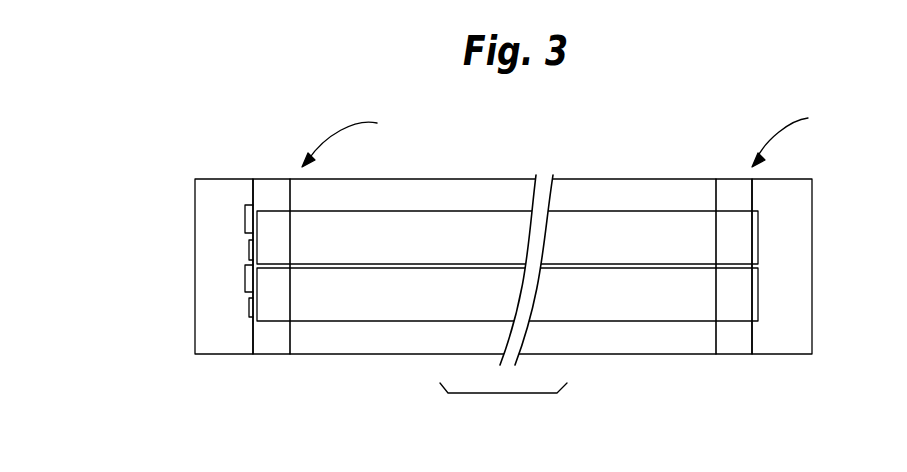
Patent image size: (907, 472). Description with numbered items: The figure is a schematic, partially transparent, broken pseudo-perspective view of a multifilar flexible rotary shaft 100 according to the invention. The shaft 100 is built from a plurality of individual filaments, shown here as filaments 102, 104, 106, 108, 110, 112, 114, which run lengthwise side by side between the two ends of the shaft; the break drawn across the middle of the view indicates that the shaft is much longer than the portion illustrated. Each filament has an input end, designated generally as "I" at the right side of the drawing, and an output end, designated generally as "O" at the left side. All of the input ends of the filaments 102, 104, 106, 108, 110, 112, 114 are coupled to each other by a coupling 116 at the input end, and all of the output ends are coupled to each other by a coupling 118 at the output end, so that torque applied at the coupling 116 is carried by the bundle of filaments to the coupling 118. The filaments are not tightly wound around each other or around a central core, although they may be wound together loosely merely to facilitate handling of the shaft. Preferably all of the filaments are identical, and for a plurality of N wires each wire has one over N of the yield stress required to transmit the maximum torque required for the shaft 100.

The multifilar flexible rotary shaft 100 is at (485, 267).
The filament 102 is at (660, 342).
The filament 104 is at (630, 304).
The filament 106 is at (665, 246).
The filament 108 is at (617, 195).
The filament 110 is at (238, 232).
The filament 112 is at (248, 298).
The filament 114 is at (255, 282).
The coupling 116 is at (798, 297).
The coupling 118 is at (212, 243).